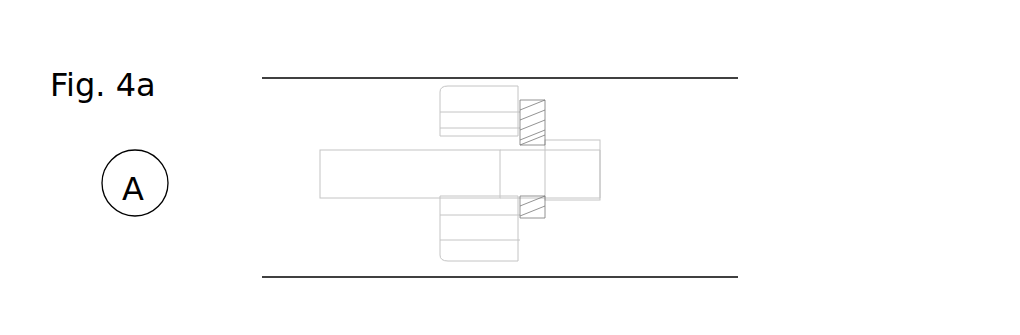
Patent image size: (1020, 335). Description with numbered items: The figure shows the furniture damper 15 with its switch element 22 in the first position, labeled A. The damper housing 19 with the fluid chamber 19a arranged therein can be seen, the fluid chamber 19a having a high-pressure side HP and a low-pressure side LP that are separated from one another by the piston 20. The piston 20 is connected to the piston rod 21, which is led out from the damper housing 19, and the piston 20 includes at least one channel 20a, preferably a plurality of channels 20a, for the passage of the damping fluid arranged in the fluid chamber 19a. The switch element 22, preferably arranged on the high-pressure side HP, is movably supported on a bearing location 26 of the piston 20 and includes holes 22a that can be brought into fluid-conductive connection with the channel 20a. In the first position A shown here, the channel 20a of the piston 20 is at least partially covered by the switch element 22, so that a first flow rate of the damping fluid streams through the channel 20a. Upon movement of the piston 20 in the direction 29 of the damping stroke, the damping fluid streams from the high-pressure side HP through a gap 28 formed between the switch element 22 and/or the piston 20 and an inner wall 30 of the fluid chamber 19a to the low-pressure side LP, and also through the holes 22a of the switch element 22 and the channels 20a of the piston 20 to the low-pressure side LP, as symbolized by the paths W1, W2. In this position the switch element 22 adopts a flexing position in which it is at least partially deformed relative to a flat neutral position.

The furniture damper 15 is at (758, 130).
The damper housing 19 is at (669, 80).
The fluid chamber 19a is at (260, 121).
The piston 20 is at (467, 247).
The channel 20a is at (455, 127).
The piston rod 21 is at (338, 180).
The switch element 22 is at (537, 133).
The hole 22a is at (542, 110).
The bearing location 26 is at (572, 173).
The gap 28 is at (502, 88).
The direction of the damping stroke 29 is at (264, 238).
The inner wall 30 is at (322, 86).
The path W1 is at (533, 232).
The path W2 is at (533, 262).
The low-pressure side LP is at (251, 181).
The high-pressure side HP is at (711, 185).